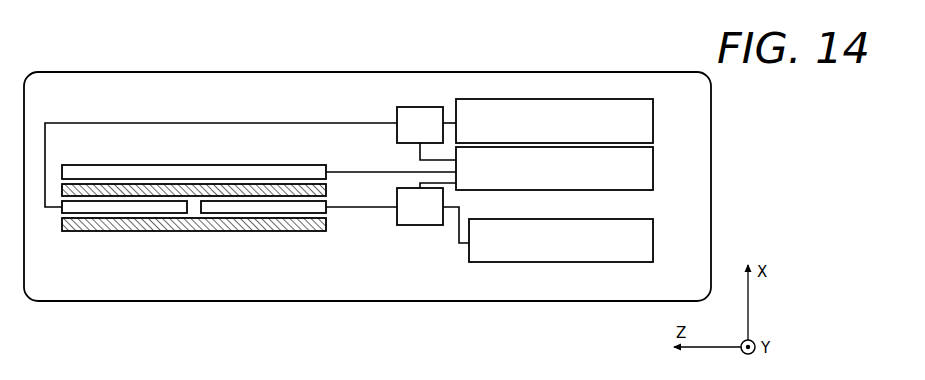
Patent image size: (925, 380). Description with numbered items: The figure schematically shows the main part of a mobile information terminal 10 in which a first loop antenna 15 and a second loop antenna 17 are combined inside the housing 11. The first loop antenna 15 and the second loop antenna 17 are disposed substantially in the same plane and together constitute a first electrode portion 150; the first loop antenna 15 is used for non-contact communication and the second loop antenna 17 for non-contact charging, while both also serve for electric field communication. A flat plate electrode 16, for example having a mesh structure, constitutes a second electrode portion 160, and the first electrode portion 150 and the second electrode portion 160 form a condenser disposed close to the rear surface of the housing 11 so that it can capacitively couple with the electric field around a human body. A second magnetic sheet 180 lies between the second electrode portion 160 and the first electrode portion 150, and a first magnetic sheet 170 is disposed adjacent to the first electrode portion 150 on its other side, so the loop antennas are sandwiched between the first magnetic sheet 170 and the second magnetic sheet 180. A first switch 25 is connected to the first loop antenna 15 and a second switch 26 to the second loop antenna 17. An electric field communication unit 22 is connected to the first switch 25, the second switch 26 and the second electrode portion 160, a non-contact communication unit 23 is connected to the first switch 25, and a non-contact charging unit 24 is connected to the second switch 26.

The mobile information terminal 10 is at (133, 55).
The housing 11 is at (500, 72).
The first loop antenna 15 is at (128, 209).
The electrode 16 is at (306, 170).
The second loop antenna 17 is at (262, 209).
The first electrode portion 150 is at (115, 257).
The second electrode portion 160 is at (191, 165).
The first magnetic sheet 170 is at (327, 224).
The second magnetic sheet 180 is at (327, 190).
The electric field communication unit 22 is at (653, 170).
The non-contact communication unit 23 is at (653, 122).
The non-contact charging unit 24 is at (653, 242).
The first switch 25 is at (407, 107).
The second switch 26 is at (412, 225).